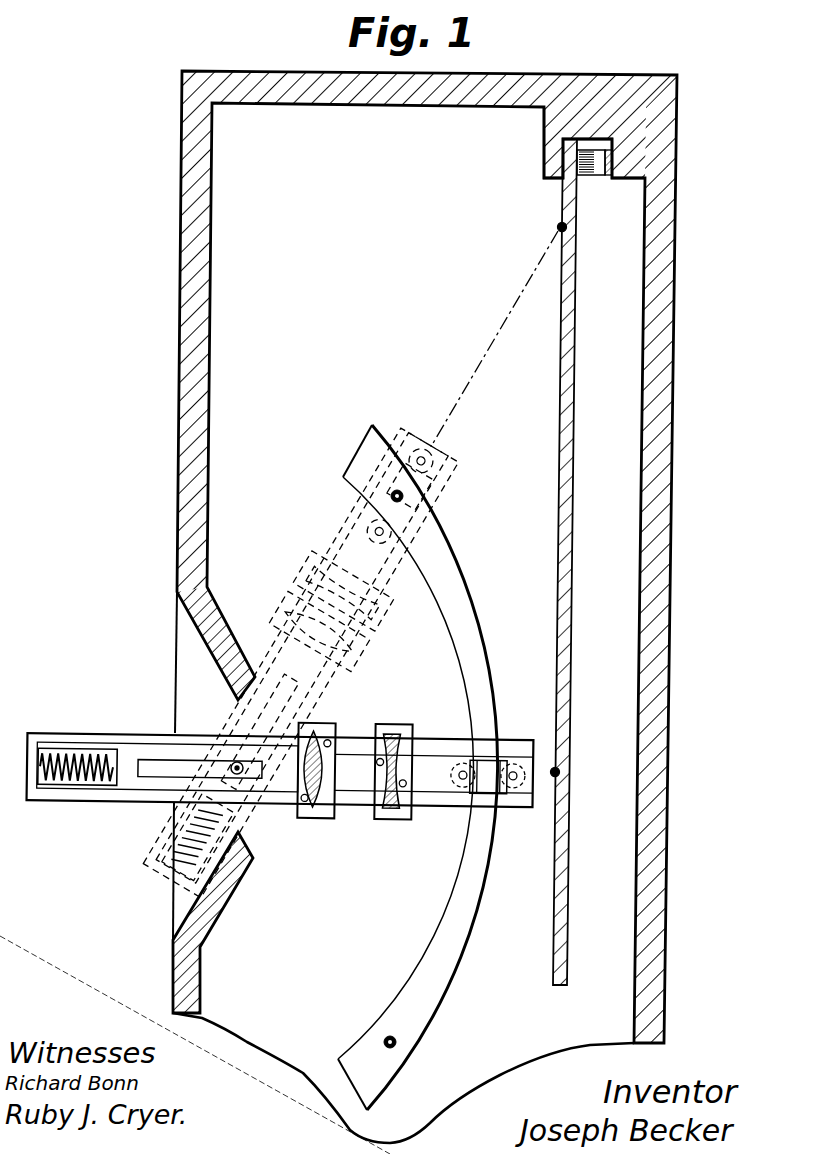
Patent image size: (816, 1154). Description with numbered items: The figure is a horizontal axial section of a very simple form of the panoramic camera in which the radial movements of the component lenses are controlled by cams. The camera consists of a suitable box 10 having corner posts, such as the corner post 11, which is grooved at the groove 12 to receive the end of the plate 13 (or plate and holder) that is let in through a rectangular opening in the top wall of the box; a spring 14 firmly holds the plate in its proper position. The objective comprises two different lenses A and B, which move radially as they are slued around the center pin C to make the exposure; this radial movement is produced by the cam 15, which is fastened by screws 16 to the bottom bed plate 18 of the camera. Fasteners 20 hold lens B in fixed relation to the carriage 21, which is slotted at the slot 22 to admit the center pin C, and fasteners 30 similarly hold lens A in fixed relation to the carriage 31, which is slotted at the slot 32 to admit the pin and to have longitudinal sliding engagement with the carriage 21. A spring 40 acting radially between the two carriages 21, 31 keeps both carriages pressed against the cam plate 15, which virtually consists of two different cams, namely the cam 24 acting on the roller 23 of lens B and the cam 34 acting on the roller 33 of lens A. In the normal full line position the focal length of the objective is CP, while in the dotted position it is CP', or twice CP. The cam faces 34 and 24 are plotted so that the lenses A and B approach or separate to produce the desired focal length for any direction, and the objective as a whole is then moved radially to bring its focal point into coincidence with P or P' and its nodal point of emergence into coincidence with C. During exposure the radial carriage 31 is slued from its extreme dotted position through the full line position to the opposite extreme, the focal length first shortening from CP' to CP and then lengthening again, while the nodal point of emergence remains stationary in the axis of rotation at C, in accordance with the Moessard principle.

The box 10 is at (182, 355).
The corner post 11 is at (562, 147).
The groove 12 is at (602, 146).
The plate 13 is at (574, 289).
The spring 14 is at (607, 168).
The cam 15 is at (441, 551).
The screws 16 is at (391, 496).
The bottom bed plate 18 is at (243, 527).
The fasteners 20 is at (377, 759).
The carriage 21 is at (360, 782).
The slot 22 is at (153, 760).
The roller 23 is at (483, 757).
The cam 24 is at (458, 880).
The fasteners 30 is at (328, 740).
The carriage 31 is at (435, 742).
The slot 32 is at (77, 750).
The roller 33 is at (488, 791).
The cam 34 is at (490, 872).
The spring 40 is at (72, 788).
The lens A is at (316, 796).
The lens B is at (393, 797).
The center pin C is at (235, 763).
The focal point P is at (579, 766).
The focal point P' is at (499, 326).